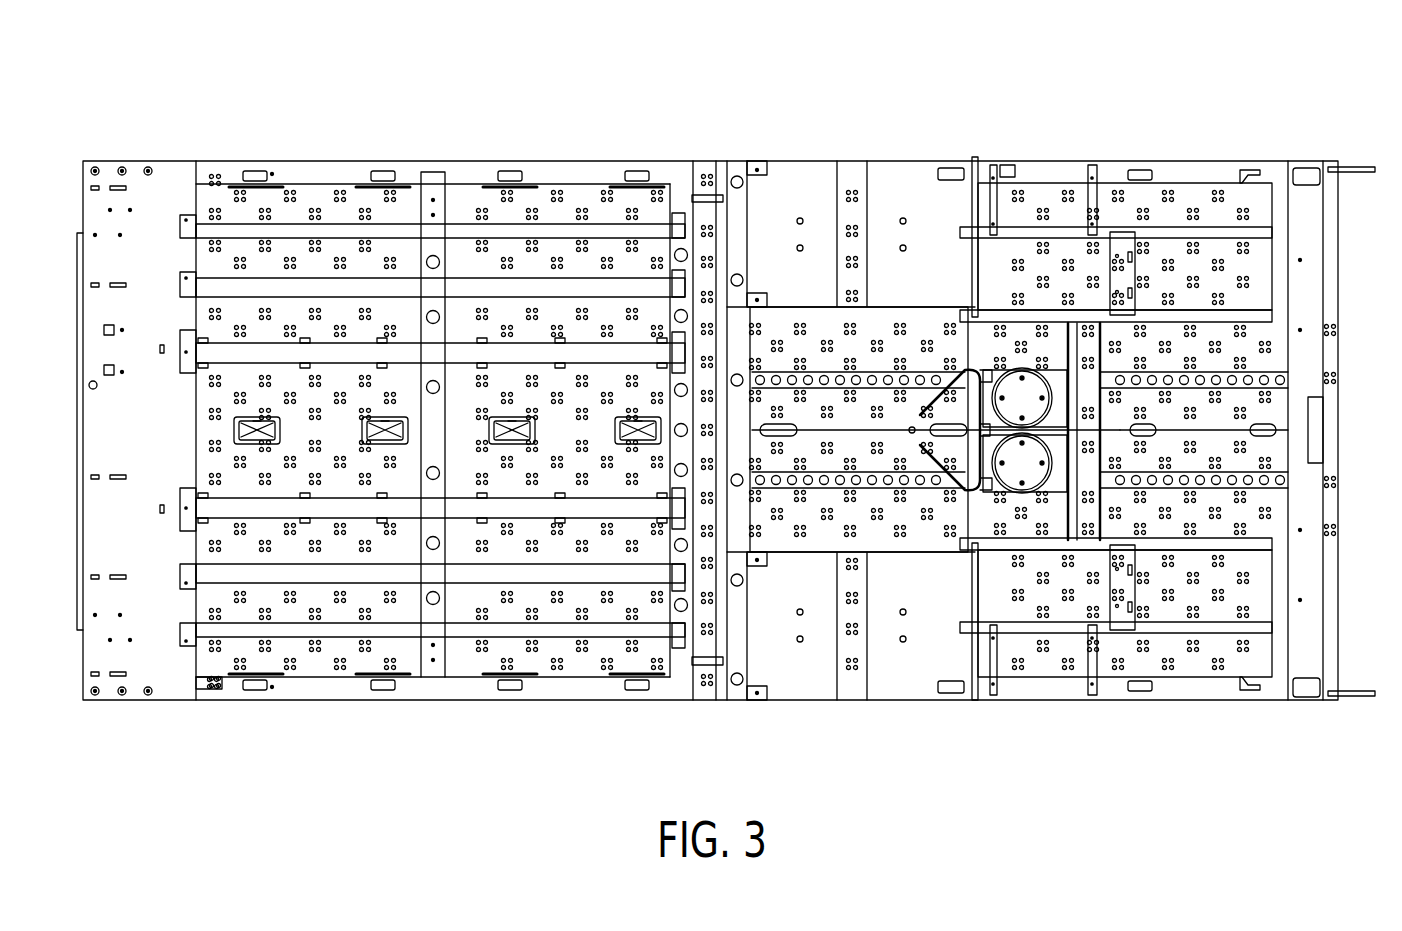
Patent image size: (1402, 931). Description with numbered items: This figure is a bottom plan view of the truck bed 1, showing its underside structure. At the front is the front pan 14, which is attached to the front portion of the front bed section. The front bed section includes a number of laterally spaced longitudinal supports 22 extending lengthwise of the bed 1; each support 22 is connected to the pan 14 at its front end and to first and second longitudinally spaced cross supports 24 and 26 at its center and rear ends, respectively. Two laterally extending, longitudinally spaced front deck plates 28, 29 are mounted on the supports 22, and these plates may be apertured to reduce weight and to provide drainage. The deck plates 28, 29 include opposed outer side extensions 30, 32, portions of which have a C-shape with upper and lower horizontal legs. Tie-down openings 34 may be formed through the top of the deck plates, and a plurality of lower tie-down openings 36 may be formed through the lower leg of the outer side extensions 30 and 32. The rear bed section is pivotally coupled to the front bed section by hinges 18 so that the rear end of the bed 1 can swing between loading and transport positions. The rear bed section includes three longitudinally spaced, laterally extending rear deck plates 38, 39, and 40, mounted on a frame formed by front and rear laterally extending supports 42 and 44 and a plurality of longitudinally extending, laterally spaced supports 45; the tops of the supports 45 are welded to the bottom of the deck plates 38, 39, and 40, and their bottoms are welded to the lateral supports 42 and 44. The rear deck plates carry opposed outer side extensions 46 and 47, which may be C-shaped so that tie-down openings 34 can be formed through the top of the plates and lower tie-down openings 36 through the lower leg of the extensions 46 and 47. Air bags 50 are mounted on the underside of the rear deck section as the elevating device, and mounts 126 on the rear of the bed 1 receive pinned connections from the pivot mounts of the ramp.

The truck bed 1 is at (770, 58).
The front pan 14 is at (135, 692).
The hinges 18 is at (707, 192).
The longitudinal supports 22 is at (510, 230).
The first cross support 24 is at (432, 682).
The second cross support 26 is at (685, 691).
The front deck plate 28 is at (215, 690).
The front deck plate 29 is at (570, 677).
The outer side extension 30 is at (612, 700).
The outer side extension 32 is at (286, 161).
The tie-down openings 34 is at (234, 432).
The lower tie-down openings 36 is at (255, 172).
The rear deck plate 38 is at (816, 686).
The rear deck plate 39 is at (1038, 655).
The rear deck plate 40 is at (1232, 655).
The front lateral support 42 is at (735, 690).
The rear lateral support 44 is at (1310, 633).
The longitudinally extending supports 45 is at (786, 378).
The outer side extension 46 is at (798, 183).
The outer side extension 47 is at (1153, 161).
The air bags 50 is at (1015, 392).
The mounts 126 is at (1350, 167).